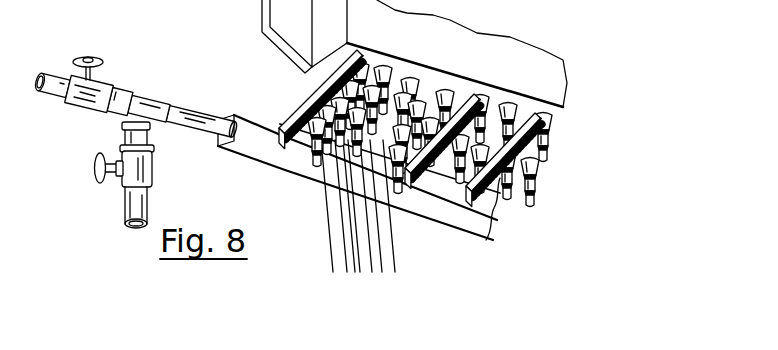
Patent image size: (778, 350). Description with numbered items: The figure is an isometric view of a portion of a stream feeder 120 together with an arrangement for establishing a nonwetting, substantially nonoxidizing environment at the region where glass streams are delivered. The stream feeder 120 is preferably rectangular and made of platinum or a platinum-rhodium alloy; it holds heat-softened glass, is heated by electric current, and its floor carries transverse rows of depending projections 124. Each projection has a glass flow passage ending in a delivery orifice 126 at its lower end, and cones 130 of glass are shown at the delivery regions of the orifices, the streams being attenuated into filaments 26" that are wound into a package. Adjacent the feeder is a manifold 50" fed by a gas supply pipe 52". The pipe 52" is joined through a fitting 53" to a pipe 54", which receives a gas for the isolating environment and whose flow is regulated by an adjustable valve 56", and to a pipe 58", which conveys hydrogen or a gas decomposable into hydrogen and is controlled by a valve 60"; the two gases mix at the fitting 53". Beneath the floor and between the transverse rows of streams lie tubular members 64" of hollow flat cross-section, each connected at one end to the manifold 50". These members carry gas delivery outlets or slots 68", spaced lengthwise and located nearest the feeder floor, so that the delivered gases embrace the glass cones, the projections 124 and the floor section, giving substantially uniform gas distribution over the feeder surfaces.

The filaments 26 is at (342, 232).
The manifold 50 is at (233, 152).
The gas supply pipe 52 is at (204, 123).
The fitting 53 is at (146, 100).
The pipe 54 is at (120, 100).
The adjustable valve 56 is at (73, 64).
The pipe 58 is at (123, 133).
The valve 60 is at (120, 190).
The tubular members 64 is at (412, 166).
The gas delivery outlets or slots 68 is at (289, 117).
The stream feeder 120 is at (280, 72).
The depending projections 124 is at (400, 28).
The delivery orifice 126 is at (424, 97).
The cones of glass 130 is at (266, 175).